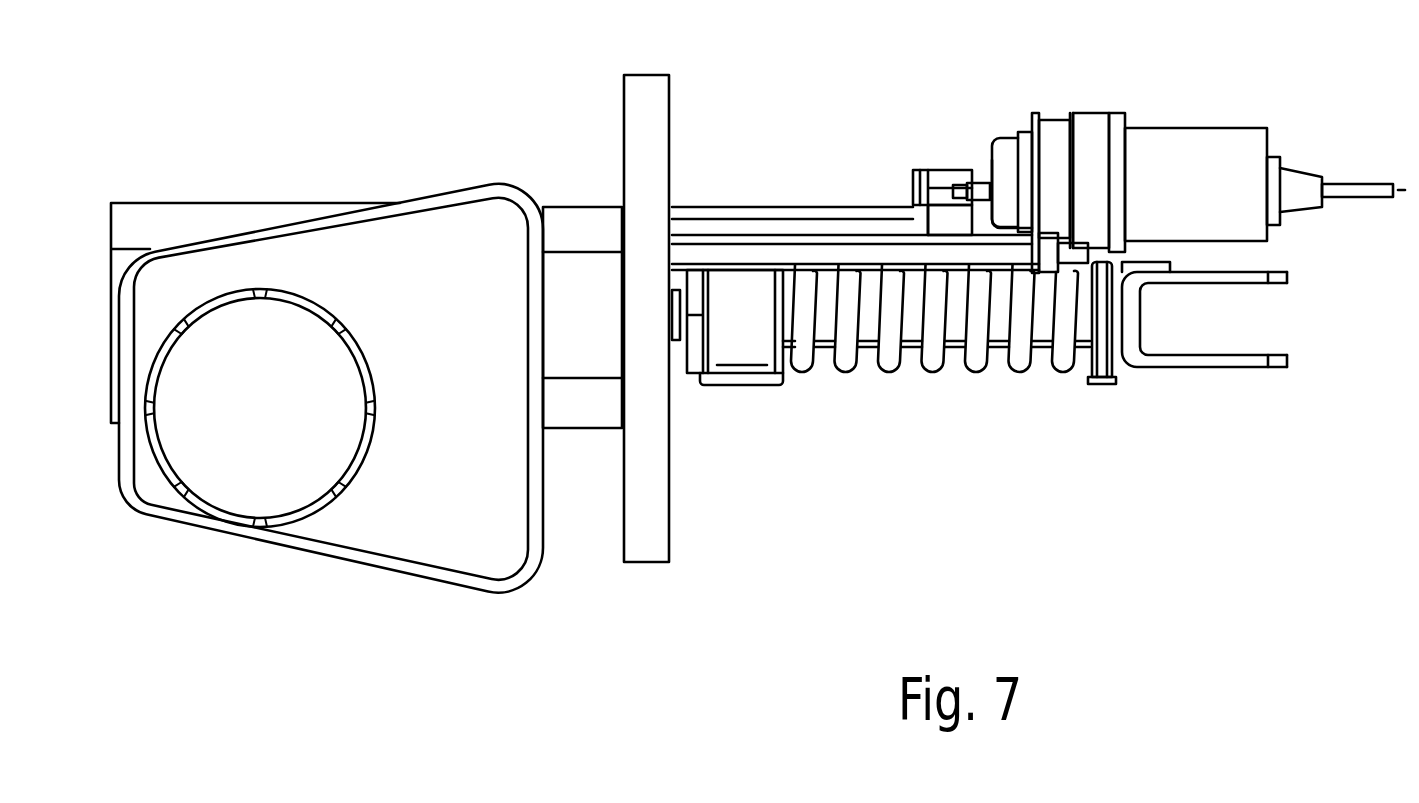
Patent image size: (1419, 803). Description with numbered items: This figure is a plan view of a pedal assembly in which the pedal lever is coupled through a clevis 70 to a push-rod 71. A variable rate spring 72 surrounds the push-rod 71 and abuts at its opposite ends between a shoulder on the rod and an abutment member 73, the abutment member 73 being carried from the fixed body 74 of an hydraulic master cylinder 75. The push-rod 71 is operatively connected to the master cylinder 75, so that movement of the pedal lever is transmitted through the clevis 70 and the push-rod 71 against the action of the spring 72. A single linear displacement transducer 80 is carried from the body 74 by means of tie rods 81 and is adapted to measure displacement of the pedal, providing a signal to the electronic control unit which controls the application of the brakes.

The clevis 70 is at (1217, 358).
The push-rod 71 is at (942, 335).
The variable rate spring 72 is at (882, 362).
The abutment member 73 is at (752, 367).
The fixed body 74 is at (647, 543).
The hydraulic master cylinder 75 is at (583, 228).
The linear displacement transducer 80 is at (1186, 148).
The tie rods 81 is at (822, 253).